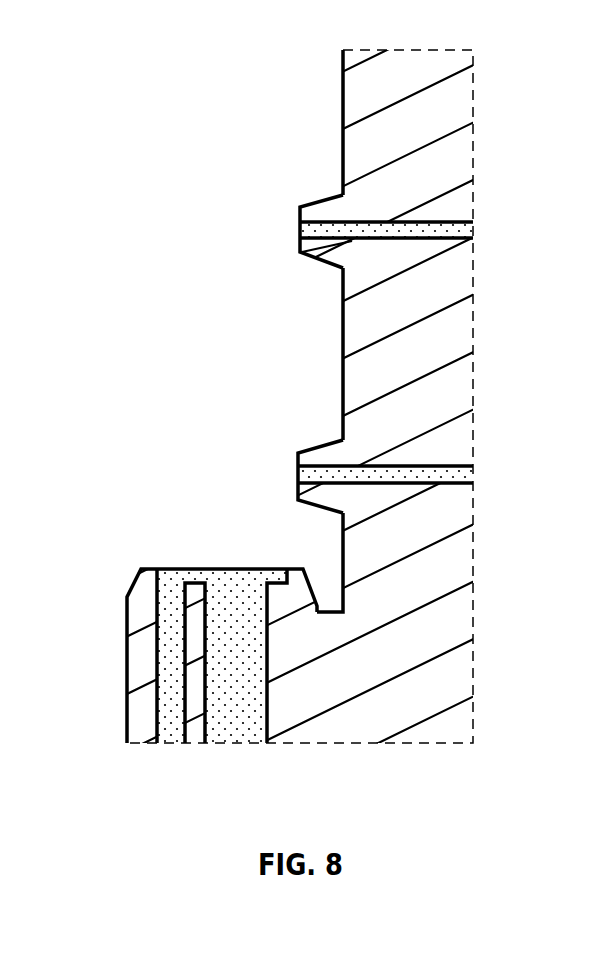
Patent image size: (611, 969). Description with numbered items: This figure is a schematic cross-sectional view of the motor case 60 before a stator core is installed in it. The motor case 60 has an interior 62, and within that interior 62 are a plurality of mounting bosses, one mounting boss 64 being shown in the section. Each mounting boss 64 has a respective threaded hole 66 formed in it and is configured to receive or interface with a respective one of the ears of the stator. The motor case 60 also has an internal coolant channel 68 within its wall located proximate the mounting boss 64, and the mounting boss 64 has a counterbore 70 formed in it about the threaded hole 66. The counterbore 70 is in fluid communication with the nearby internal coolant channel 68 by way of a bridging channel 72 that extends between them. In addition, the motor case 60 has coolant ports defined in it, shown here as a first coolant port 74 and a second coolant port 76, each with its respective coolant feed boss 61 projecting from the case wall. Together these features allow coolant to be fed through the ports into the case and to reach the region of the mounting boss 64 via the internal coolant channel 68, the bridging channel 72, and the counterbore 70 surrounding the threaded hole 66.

The motor case 60 is at (316, 338).
The coolant feed boss 61 is at (318, 201).
The interior 62 is at (208, 247).
The mounting boss 64 is at (142, 595).
The threaded hole 66 is at (266, 652).
The internal coolant channel 68 is at (168, 660).
The counterbore 70 is at (182, 635).
The bridging channel 72 is at (191, 580).
The first coolant port 74 is at (443, 222).
The second coolant port 76 is at (422, 476).